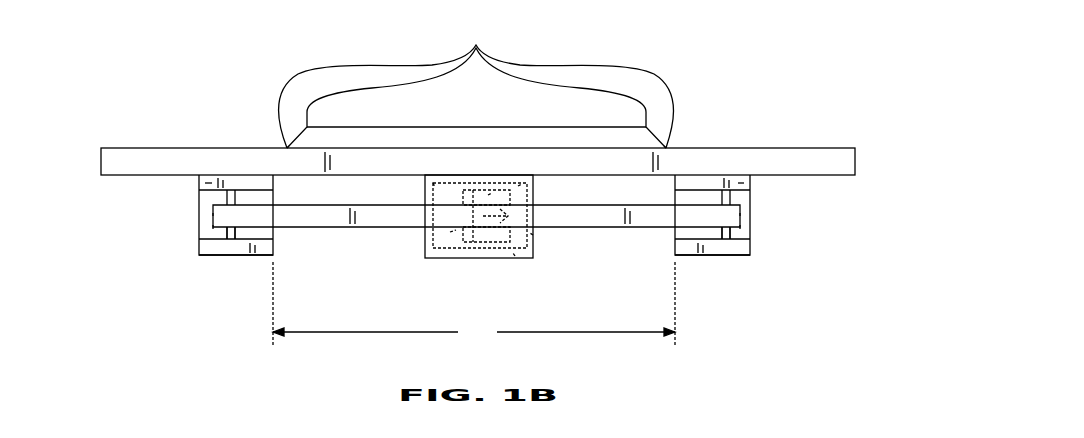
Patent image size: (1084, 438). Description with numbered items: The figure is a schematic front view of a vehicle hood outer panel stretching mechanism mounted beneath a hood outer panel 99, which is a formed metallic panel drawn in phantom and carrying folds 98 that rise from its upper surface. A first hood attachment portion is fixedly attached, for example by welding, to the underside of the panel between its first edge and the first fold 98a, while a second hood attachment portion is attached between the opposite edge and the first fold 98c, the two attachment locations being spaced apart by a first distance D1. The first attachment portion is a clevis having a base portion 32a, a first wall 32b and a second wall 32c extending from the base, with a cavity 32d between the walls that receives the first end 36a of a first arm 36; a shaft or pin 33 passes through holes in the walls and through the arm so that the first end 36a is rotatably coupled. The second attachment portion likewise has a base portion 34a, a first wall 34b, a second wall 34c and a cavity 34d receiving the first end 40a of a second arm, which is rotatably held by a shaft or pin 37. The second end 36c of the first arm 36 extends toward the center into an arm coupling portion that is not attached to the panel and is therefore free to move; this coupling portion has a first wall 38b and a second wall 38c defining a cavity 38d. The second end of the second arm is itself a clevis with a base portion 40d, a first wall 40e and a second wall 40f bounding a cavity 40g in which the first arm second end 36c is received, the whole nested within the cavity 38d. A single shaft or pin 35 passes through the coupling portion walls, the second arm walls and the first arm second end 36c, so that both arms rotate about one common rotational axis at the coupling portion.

The hood outer panel 99 is at (98, 161).
The folds 98 is at (476, 45).
The first fold 98a is at (287, 147).
The first fold 98c is at (667, 147).
The base portion 32a is at (200, 212).
The first wall 32b is at (212, 182).
The second wall 32c is at (224, 256).
The cavity 32d is at (212, 215).
The shaft or pin 33 is at (250, 256).
The base portion 34a is at (751, 212).
The first wall 34b is at (740, 182).
The second wall 34c is at (733, 256).
The cavity 34d is at (742, 215).
The shaft or pin 35 is at (466, 218).
The first arm 36 is at (325, 229).
The first end 36a is at (212, 229).
The second end 36c is at (434, 185).
The shaft or pin 37 is at (702, 256).
The first wall 38b is at (461, 183).
The second wall 38c is at (466, 258).
The cavity 38d is at (455, 233).
The first end 40a is at (742, 229).
The base portion 40d is at (533, 236).
The first wall 40e is at (489, 196).
The second wall 40f is at (515, 257).
The cavity 40g is at (520, 186).
The first distance D1 is at (474, 303).